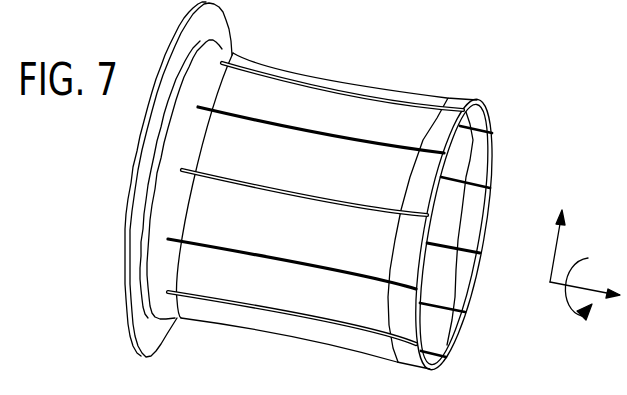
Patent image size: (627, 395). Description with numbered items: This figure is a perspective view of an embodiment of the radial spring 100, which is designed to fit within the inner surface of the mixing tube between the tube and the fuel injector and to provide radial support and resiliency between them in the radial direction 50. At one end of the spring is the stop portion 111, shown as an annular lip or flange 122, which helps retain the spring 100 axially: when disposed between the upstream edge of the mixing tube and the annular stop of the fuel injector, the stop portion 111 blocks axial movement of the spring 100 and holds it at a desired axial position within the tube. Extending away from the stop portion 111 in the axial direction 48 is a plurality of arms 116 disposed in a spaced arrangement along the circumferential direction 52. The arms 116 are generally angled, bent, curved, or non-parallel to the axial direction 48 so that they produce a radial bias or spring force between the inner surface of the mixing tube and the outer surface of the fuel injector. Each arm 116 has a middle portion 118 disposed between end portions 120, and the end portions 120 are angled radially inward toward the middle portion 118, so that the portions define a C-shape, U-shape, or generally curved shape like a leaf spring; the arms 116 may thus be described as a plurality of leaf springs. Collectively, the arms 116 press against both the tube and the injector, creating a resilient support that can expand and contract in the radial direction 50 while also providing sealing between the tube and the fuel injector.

The radial spring 100 is at (116, 146).
The stop portion 111 is at (212, 26).
The flange 122 is at (178, 50).
The middle portion 118 is at (349, 83).
The end portions 120 is at (262, 66).
The arms 116 is at (480, 243).
The radial direction 50 is at (553, 248).
The axial direction 48 is at (557, 284).
The circumferential direction 52 is at (590, 259).